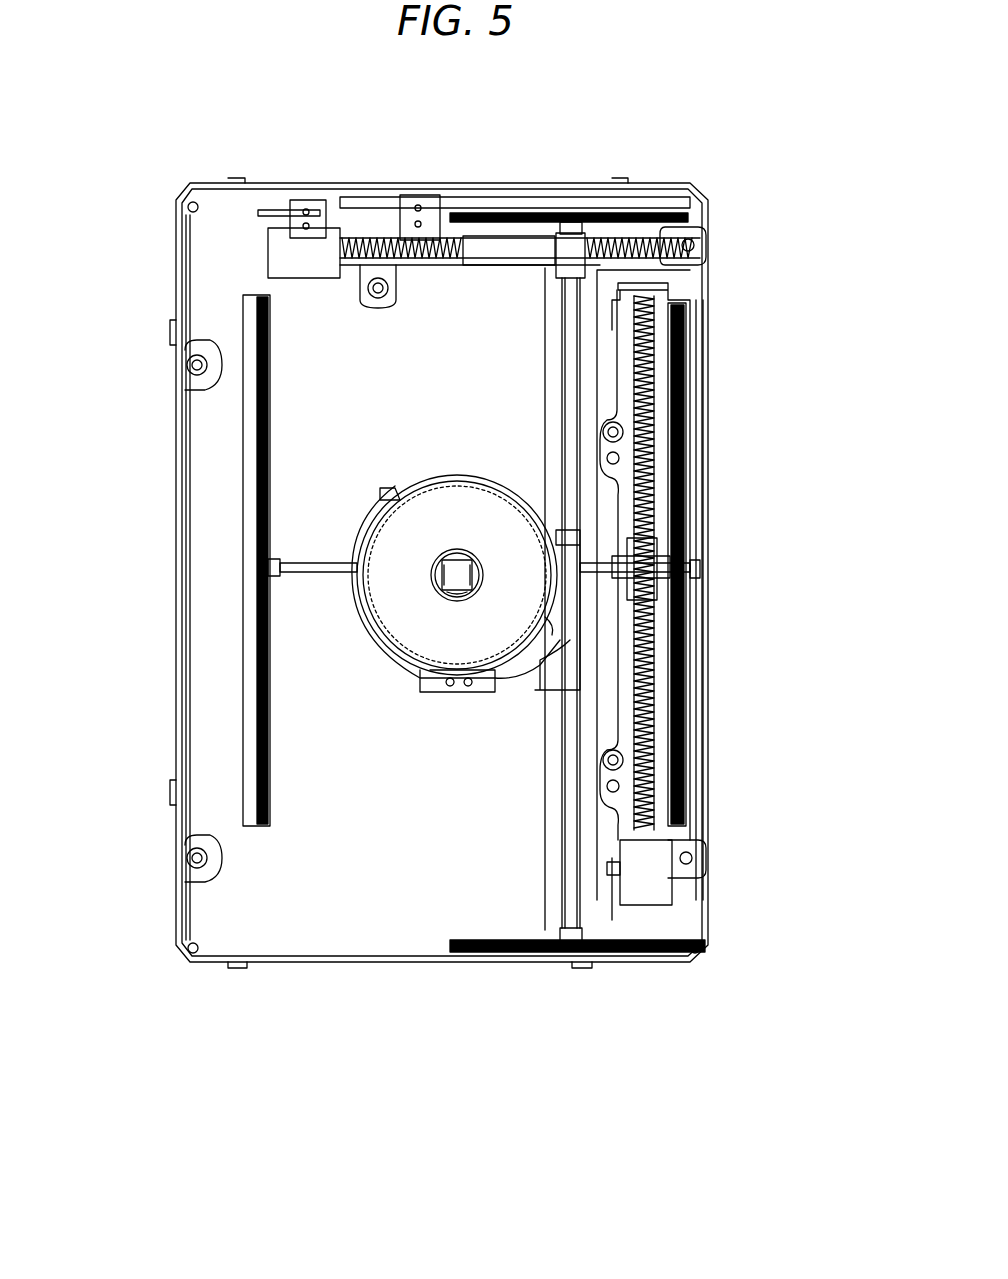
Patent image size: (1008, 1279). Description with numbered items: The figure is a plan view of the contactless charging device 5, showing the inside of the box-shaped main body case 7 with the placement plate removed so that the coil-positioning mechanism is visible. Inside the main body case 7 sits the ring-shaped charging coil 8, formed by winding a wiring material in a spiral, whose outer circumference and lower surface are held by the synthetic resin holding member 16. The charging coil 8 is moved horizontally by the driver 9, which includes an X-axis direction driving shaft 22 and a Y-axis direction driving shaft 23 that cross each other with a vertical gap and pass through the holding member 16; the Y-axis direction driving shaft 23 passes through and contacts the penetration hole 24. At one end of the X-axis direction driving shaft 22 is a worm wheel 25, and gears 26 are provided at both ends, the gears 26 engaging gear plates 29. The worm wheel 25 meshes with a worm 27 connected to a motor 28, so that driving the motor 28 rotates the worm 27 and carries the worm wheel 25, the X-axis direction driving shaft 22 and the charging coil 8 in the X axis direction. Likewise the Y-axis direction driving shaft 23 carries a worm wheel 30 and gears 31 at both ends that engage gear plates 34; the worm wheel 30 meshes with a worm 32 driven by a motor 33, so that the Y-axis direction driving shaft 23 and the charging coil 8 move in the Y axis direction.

The contactless charging device 5 is at (105, 585).
The main body case 7 is at (200, 195).
The charging coil 8 is at (410, 615).
The driver 9 is at (655, 240).
The holding member 16 is at (440, 690).
The X-axis direction driving shaft 22 is at (300, 568).
The Y-axis direction driving shaft 23 is at (575, 358).
The penetration hole 24 is at (575, 685).
The worm wheel 25 is at (648, 585).
The gear 26 is at (275, 565).
The worm 27 is at (648, 385).
The motor 28 is at (655, 888).
The gear plate 29 is at (680, 685).
The worm wheel 30 is at (570, 250).
The gear 31 is at (575, 222).
The worm 32 is at (365, 235).
The motor 33 is at (280, 240).
The gear plate 34 is at (490, 212).